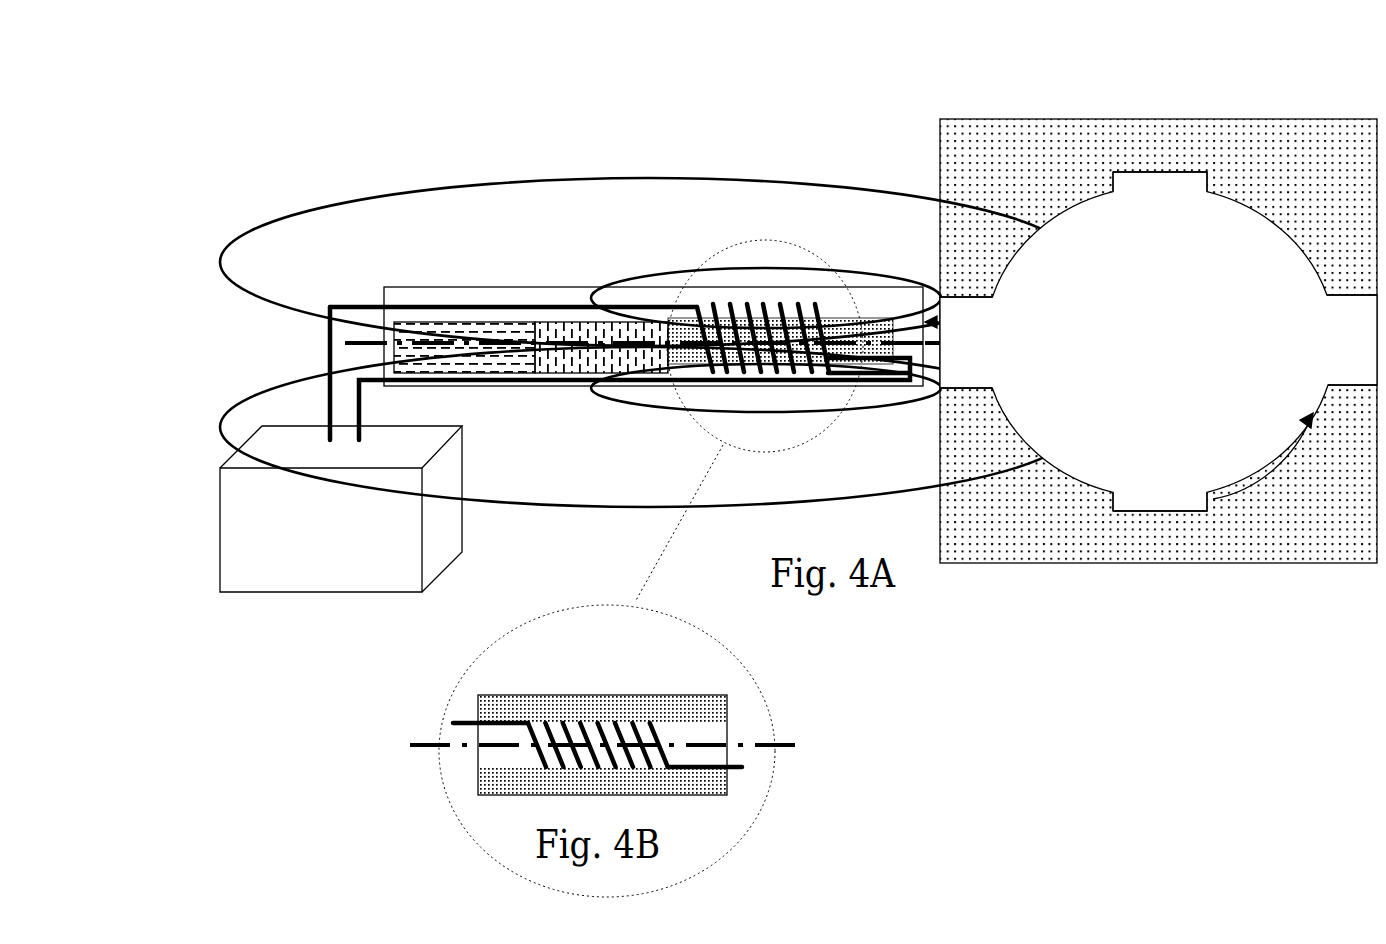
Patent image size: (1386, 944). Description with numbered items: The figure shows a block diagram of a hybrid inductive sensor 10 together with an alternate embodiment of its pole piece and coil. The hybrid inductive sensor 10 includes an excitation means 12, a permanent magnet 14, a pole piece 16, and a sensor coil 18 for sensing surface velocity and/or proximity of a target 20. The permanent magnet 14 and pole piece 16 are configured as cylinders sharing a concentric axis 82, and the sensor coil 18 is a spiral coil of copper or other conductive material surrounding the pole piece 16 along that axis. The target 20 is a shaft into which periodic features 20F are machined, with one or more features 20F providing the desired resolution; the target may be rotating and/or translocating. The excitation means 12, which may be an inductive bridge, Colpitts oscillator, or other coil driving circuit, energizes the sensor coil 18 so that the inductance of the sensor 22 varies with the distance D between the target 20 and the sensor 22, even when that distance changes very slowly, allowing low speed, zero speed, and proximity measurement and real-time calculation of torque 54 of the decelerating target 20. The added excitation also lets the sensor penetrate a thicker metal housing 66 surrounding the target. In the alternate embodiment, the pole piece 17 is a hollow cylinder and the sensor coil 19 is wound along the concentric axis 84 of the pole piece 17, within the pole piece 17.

In FIG. 4A, the hybrid inductive sensor 10 is at (293, 150).
In FIG. 4A, the excitation means 12 is at (284, 580).
In FIG. 4A, the permanent magnet 14 is at (548, 375).
In FIG. 4A, the pole piece 16 is at (693, 364).
In FIG. 4B, the pole piece 17 is at (478, 792).
In FIG. 4A, the sensor coil 18 is at (748, 310).
In FIG. 4B, the sensor coil 19 is at (564, 700).
In FIG. 4A, the target 20 is at (1173, 352).
In FIG. 4A, the features 20F is at (1163, 178).
In FIG. 4A, the sensor 22 is at (408, 289).
In FIG. 4A, the torque 54 is at (1245, 490).
In FIG. 4A, the housing 66 is at (1003, 119).
In FIG. 4A, the concentric axis 82 is at (345, 345).
In FIG. 4B, the concentric axis 84 is at (410, 745).
In FIG. 4A, the distance D is at (953, 305).